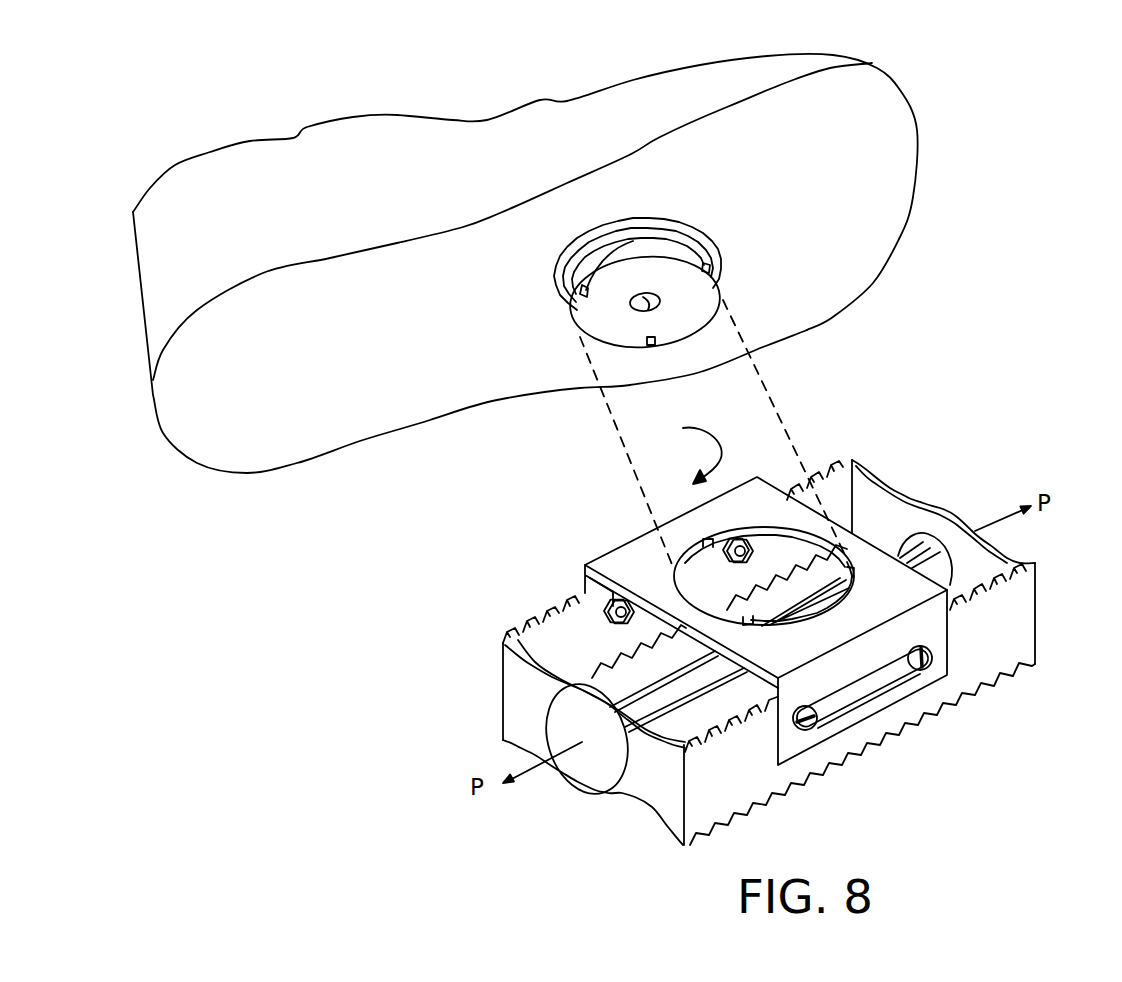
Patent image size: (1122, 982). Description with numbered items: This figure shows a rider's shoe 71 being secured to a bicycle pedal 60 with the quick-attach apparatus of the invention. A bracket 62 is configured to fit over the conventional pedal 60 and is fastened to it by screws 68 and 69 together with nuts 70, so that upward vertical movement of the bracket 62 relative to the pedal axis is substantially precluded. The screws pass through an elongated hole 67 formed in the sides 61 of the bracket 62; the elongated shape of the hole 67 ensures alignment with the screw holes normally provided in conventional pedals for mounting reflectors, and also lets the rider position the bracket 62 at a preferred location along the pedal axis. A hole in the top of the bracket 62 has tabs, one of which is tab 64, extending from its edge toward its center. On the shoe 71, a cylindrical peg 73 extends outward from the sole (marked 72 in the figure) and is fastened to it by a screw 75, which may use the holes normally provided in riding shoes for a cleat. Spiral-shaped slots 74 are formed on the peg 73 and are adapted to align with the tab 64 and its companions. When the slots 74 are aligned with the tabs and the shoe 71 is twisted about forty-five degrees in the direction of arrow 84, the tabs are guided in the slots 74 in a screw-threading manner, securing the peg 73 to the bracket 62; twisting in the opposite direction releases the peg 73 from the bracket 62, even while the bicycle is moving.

The pedal 60 is at (1013, 600).
The sides 61 is at (927, 620).
The bracket 62 is at (897, 586).
The tab 64 is at (852, 572).
The elongated hole 67 is at (858, 690).
The screw 68 is at (926, 670).
The screw 69 is at (813, 730).
The nut 70 is at (587, 596).
The shoe 71 is at (405, 100).
The shoe sole 72 is at (680, 223).
The peg 73 is at (676, 322).
The slots 74 is at (588, 285).
The screw 75 is at (643, 308).
The arrow 84 is at (688, 464).